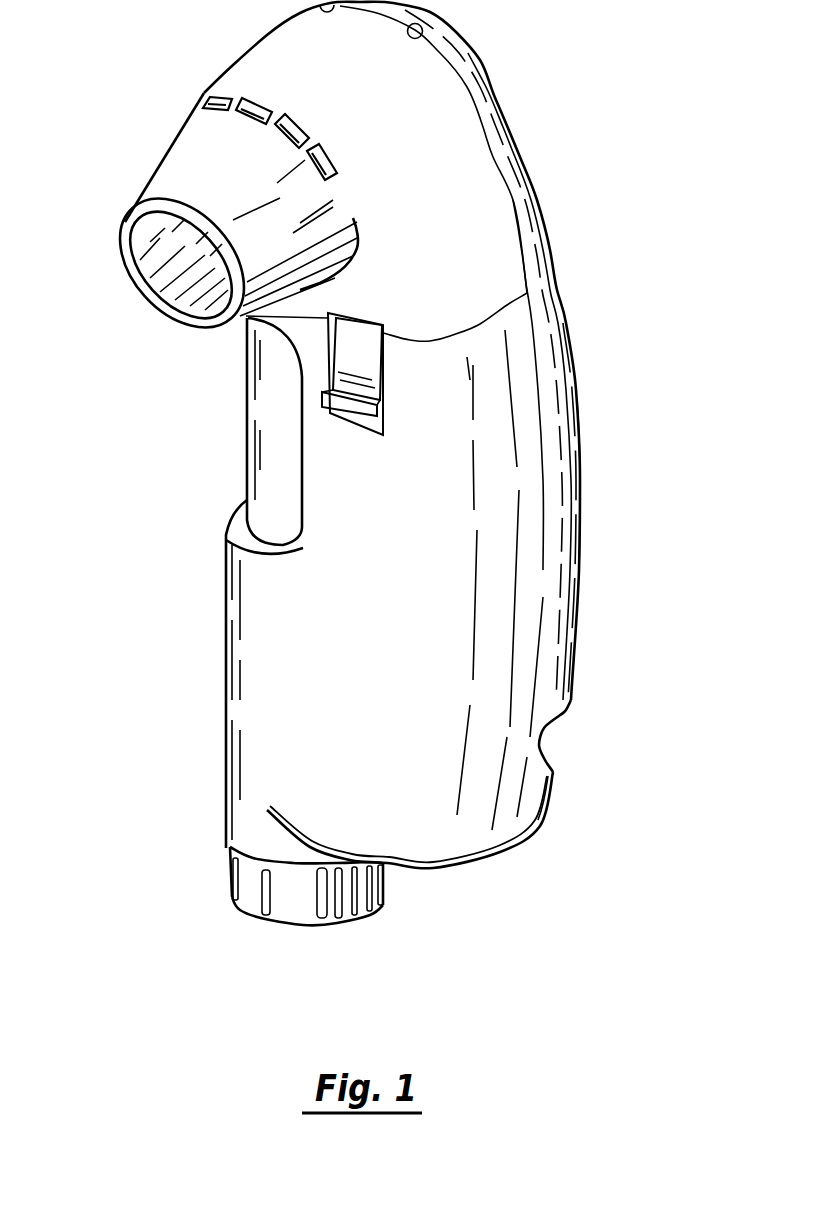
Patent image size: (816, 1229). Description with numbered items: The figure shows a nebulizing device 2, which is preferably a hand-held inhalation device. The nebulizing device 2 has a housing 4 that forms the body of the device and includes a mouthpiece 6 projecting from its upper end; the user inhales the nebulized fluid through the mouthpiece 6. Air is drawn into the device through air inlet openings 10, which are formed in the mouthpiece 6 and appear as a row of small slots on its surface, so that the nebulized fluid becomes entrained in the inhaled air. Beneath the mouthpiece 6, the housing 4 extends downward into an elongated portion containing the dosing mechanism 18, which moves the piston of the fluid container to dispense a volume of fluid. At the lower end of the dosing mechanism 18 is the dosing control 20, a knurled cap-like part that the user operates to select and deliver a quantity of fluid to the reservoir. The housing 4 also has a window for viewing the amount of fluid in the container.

The nebulizing device 2 is at (578, 271).
The housing 4 is at (542, 453).
The mouthpiece 6 is at (202, 163).
The air inlet openings 10 is at (300, 128).
The dosing mechanism 18 is at (272, 683).
The dosing control 20 is at (385, 884).